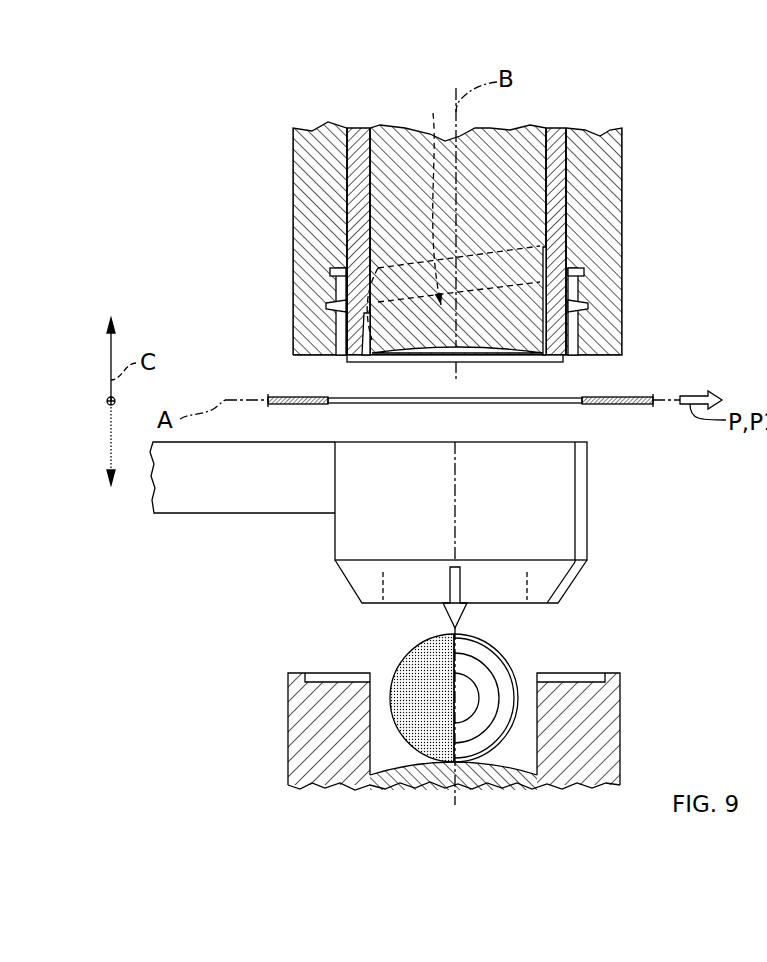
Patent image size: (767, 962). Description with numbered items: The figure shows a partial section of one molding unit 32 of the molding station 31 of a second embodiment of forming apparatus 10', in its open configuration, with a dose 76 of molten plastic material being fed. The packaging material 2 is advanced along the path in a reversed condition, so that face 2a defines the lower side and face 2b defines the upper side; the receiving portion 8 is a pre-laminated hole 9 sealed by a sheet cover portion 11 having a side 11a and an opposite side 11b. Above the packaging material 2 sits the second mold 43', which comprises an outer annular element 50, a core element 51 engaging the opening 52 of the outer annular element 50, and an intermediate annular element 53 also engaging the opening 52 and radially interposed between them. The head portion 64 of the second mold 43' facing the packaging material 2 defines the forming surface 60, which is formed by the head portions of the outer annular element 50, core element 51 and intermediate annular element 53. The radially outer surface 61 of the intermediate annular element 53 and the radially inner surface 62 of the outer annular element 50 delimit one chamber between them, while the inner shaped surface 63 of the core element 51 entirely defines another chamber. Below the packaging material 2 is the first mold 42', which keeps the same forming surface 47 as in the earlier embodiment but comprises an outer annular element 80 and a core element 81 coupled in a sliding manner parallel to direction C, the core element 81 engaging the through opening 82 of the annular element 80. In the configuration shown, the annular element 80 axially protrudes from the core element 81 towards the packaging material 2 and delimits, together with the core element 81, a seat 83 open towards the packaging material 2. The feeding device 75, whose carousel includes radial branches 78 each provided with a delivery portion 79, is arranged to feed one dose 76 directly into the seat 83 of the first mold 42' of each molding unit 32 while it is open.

The apparatus 10' is at (471, 219).
The second mold 43' is at (293, 88).
The intermediate annular element 53 is at (363, 140).
The core element 51 is at (520, 140).
The opening 52 is at (352, 177).
The outer annular element 50 is at (300, 208).
The radially inner surface 62 is at (352, 288).
The radially outer surface 61 is at (338, 333).
The inner shaped surface 63 is at (424, 198).
The head portion 64 is at (455, 325).
The molding unit 32 is at (630, 278).
The forming surface 60 is at (443, 352).
The packaging material 2 is at (447, 408).
The face 2a is at (302, 406).
The face 2b is at (646, 394).
The hole 9 is at (340, 397).
The cover portion 11 is at (542, 398).
The side 11a is at (427, 406).
The side 11b is at (465, 398).
The receiving portion 8 is at (550, 408).
The feeding device 75 is at (221, 529).
The radial branch 78 is at (252, 490).
The molding station 31 is at (318, 584).
The delivery portion 79 is at (503, 578).
The dose 76 is at (490, 682).
The first mold 42' is at (437, 733).
The forming surface 47 is at (333, 672).
The seat 83 is at (380, 706).
The outer annular element 80 is at (592, 717).
The core element 81 is at (446, 778).
The through opening 82 is at (534, 735).